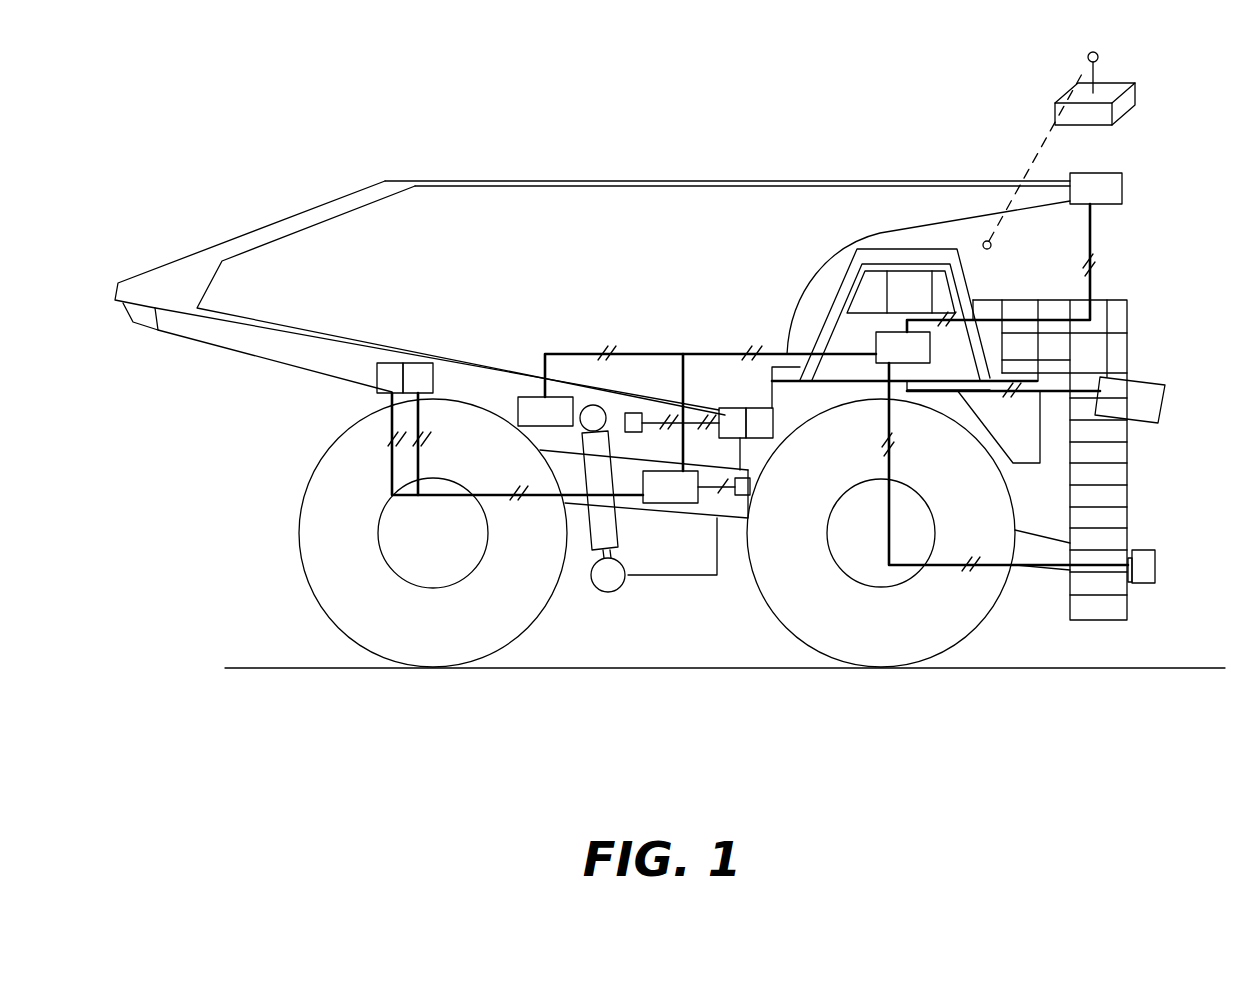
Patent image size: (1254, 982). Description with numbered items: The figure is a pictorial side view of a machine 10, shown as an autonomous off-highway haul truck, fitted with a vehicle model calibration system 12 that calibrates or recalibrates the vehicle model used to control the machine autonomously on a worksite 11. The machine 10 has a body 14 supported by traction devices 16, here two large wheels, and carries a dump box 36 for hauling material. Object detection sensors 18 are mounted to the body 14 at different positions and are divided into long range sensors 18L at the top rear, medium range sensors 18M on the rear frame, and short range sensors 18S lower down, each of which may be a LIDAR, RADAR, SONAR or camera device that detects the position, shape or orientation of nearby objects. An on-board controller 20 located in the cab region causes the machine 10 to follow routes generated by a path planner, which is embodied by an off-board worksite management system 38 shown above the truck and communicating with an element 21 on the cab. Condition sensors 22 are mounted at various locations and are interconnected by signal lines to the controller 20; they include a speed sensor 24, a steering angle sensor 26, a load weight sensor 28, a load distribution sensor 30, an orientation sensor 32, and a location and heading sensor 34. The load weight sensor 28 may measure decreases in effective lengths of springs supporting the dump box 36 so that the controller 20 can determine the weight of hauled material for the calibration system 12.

The machine 10 is at (226, 565).
The worksite 11 is at (205, 140).
The vehicle model calibration system 12 is at (592, 271).
The body 14 is at (601, 249).
The traction devices 16 is at (390, 642).
The sensors 18 is at (518, 405).
The long range sensors 18L is at (1108, 197).
The medium range sensors 18M is at (1145, 395).
The short range sensors 18S is at (1143, 580).
The on-board controller 20 is at (890, 343).
The communication device / antenna 21 is at (985, 250).
The sensors 22 is at (675, 490).
The speed sensor 24 is at (746, 408).
The steering angle sensor 26 is at (775, 423).
The load weight sensor 28 is at (378, 380).
The load distribution sensor 30 is at (405, 363).
The orientation sensor 32 is at (742, 500).
The location and heading sensor 34 is at (634, 413).
The dump box 36 is at (560, 202).
The worksite management system 38 is at (1133, 98).